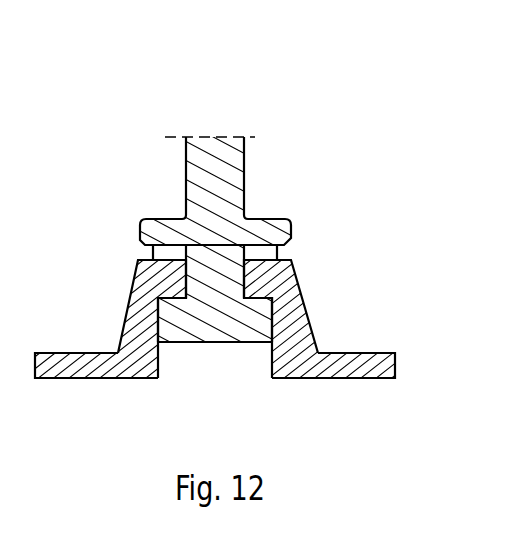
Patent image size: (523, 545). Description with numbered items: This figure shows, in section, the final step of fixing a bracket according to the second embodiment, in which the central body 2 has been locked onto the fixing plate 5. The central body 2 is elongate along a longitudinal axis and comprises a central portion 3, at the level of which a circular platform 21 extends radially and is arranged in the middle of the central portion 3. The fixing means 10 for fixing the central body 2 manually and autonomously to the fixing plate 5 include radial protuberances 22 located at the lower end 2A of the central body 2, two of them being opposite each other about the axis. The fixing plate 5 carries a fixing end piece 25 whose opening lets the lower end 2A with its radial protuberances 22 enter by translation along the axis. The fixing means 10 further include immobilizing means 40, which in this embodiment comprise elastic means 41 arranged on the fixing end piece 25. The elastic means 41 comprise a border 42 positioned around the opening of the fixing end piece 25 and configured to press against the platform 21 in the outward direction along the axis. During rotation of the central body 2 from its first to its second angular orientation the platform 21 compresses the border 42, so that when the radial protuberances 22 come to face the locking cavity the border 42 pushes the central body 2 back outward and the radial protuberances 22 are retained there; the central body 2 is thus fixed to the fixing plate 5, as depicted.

The central body 2 is at (200, 167).
The central portion 3 is at (220, 186).
The platform 21 is at (262, 224).
The immobilizing means 40 is at (289, 233).
The elastic means 41 is at (150, 251).
The border 42 is at (286, 253).
The fixing end piece 25 is at (290, 294).
The fixing plate 5 is at (76, 370).
The radial protuberances 22 is at (181, 329).
The lower end 2A is at (210, 320).
The fixing means 10 is at (245, 352).